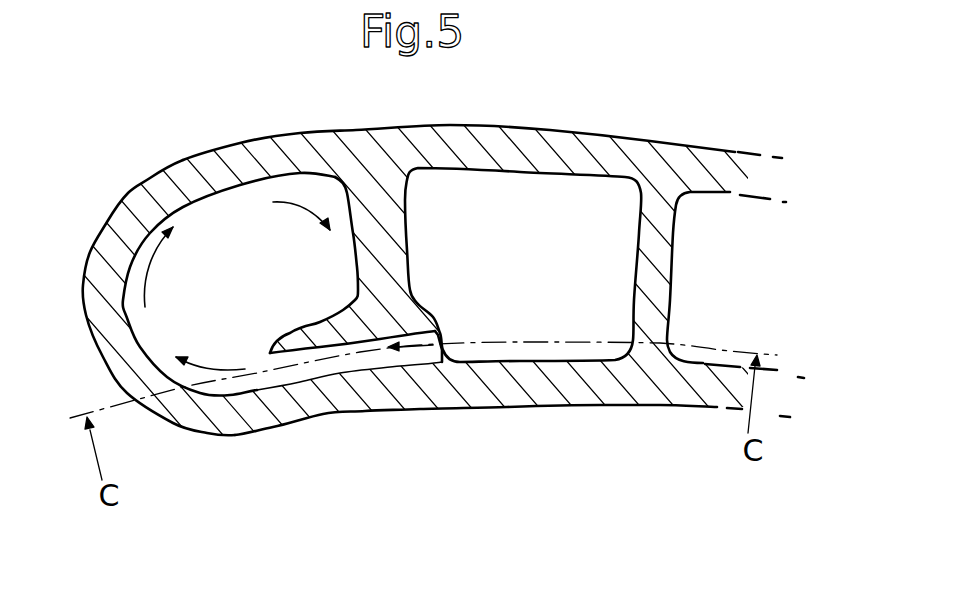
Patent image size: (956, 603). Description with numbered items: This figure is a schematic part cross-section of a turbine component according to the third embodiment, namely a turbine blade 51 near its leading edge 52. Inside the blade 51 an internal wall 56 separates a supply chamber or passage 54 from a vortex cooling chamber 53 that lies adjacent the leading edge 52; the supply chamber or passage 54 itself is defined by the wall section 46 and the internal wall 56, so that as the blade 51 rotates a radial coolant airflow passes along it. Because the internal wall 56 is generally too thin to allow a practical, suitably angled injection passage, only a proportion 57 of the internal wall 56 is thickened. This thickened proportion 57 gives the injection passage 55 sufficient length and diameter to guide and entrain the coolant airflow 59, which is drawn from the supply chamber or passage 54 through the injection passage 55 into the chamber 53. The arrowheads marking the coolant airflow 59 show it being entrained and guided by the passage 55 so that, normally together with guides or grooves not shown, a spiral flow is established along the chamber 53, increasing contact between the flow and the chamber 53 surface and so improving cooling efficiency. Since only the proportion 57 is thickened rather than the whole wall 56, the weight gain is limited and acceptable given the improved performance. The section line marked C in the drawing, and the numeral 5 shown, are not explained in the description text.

The flow direction arrow 5 is at (200, 369).
The wall section 46 is at (562, 377).
The turbine blade 51 is at (437, 121).
The leading edge 52 is at (93, 247).
The vortex cooling chamber 53 is at (232, 220).
The supply chamber or passage 54 is at (540, 240).
The injection passage 55 is at (293, 375).
The internal wall 56 is at (383, 243).
The thickened proportion of the internal wall 57 is at (294, 335).
The coolant airflow 59 is at (295, 200).